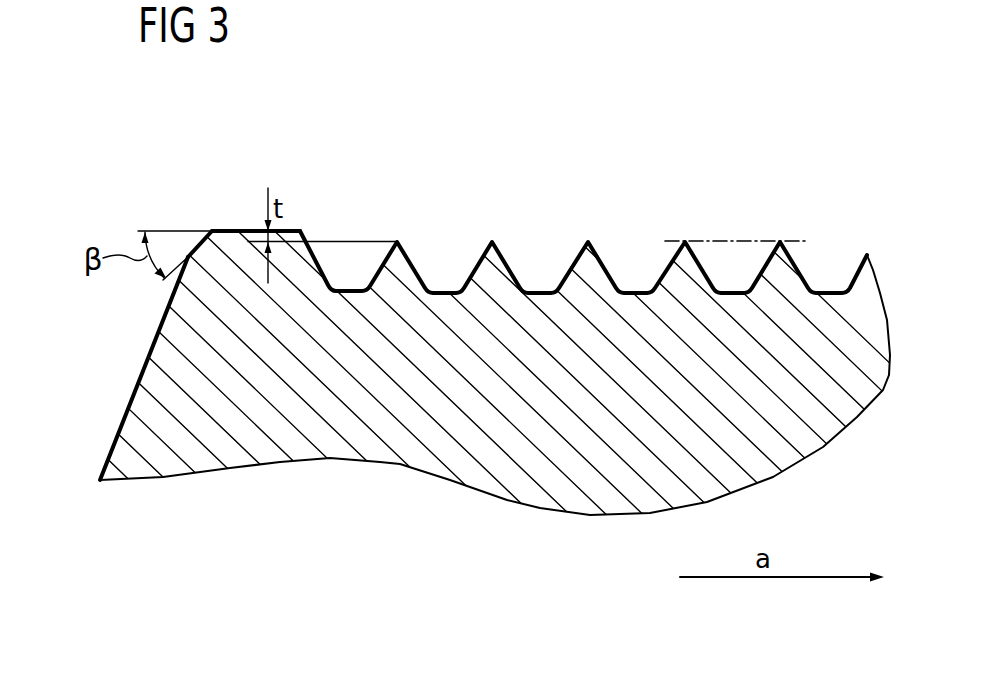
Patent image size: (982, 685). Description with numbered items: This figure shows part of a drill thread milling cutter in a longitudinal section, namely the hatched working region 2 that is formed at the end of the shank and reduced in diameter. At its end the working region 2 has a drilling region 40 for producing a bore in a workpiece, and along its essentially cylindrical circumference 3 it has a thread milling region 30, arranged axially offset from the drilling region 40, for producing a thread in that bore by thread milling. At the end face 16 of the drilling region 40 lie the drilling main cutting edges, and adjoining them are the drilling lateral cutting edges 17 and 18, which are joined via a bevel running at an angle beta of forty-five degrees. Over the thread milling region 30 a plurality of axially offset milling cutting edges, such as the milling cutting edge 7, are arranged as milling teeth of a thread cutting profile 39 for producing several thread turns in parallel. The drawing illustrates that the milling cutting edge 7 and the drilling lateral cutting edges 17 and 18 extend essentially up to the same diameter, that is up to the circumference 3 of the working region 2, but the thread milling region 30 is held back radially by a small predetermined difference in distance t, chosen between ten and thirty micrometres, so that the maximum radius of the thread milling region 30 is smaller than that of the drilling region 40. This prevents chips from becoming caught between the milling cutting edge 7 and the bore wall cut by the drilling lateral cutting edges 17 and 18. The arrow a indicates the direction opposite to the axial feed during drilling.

The working region 2 is at (590, 487).
The circumference 3 is at (739, 230).
The milling cutting edge 7 is at (607, 263).
The end face 16 is at (102, 352).
The drilling lateral cutting edge 17 is at (237, 222).
The drilling lateral cutting edge 18 is at (195, 258).
The thread milling region 30 is at (397, 267).
The thread cutting profile 39 is at (527, 232).
The drilling region 40 is at (168, 432).